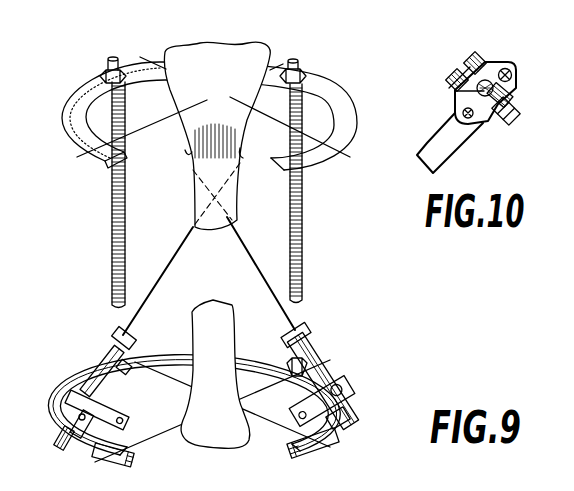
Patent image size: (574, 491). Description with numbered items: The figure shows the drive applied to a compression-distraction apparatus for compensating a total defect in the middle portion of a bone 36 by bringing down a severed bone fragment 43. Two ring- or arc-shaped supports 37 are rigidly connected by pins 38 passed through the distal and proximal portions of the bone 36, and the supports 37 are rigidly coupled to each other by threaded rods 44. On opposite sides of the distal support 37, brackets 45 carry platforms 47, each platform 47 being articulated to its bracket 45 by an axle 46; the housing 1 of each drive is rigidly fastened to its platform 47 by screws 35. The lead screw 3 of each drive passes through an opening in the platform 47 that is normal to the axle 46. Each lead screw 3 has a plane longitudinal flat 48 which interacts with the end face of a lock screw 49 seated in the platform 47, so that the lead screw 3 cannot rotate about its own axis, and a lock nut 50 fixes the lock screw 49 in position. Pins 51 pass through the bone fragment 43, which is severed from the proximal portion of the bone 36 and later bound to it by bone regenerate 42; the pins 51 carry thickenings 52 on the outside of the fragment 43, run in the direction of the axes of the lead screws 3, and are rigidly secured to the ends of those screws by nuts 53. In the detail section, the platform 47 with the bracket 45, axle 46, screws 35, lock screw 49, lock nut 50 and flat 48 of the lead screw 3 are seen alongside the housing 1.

In FIG. 9, the housing 1 is at (78, 388).
In FIG. 10, the housing 1 is at (458, 140).
In FIG. 9, the lead screw 3 is at (316, 351).
In FIG. 10, the lead screw 3 is at (507, 63).
In FIG. 9, the screws 35 is at (340, 372).
In FIG. 10, the screws 35 is at (513, 83).
In FIG. 9, the bone 36 is at (260, 50).
In FIG. 9, the supports 37 is at (328, 97).
In FIG. 9, the pins 38 is at (357, 124).
In FIG. 9, the bone regenerate 42 is at (203, 140).
In FIG. 9, the bone fragment 43 is at (232, 218).
In FIG. 9, the threaded rods 44 is at (112, 268).
In FIG. 9, the brackets 45 is at (60, 434).
In FIG. 10, the brackets 45 is at (481, 58).
In FIG. 9, the axle 46 is at (64, 414).
In FIG. 10, the axle 46 is at (458, 70).
In FIG. 10, the platform 47 is at (460, 101).
In FIG. 10, the plane longitudinal flat 48 is at (455, 90).
In FIG. 9, the lock screw 49 is at (352, 410).
In FIG. 10, the lock screw 49 is at (512, 122).
In FIG. 10, the lock nut 50 is at (513, 101).
In FIG. 9, the pins 51 is at (180, 248).
In FIG. 9, the thickenings 52 is at (240, 150).
In FIG. 9, the nuts 53 is at (115, 334).